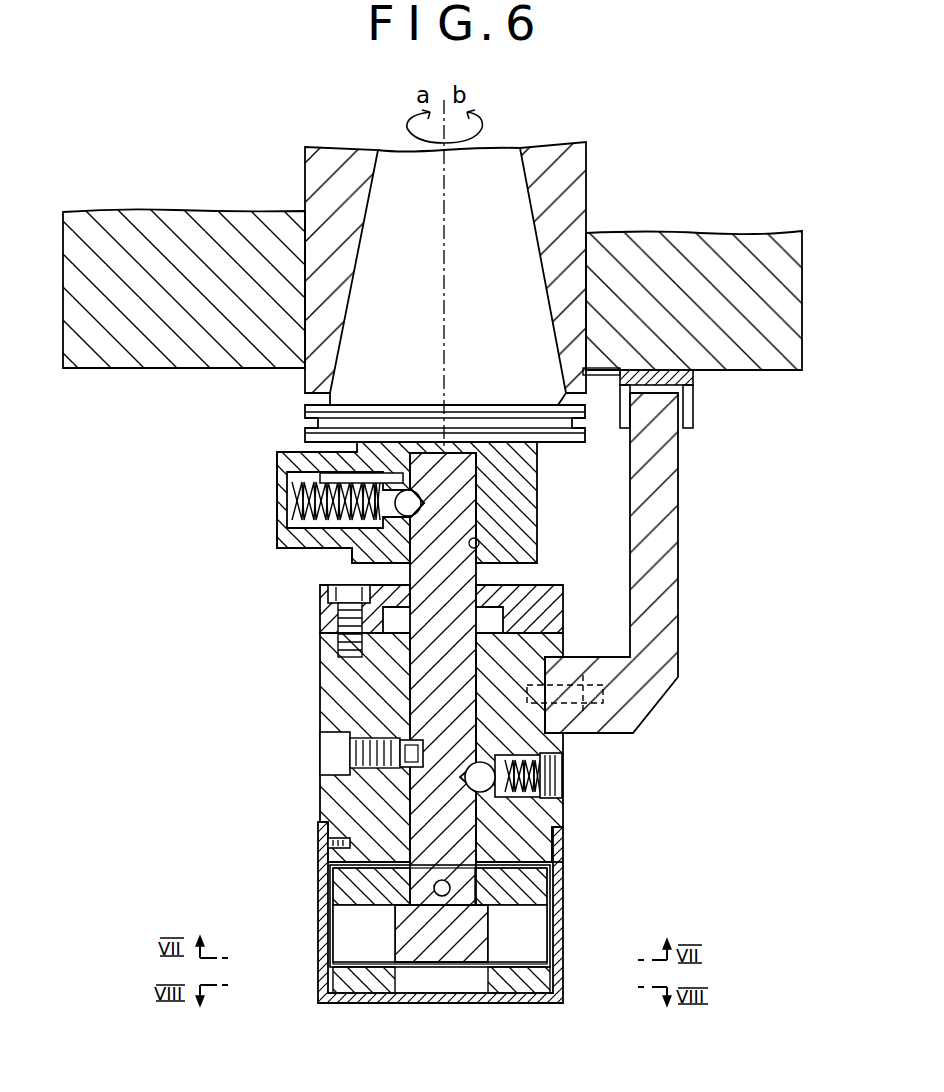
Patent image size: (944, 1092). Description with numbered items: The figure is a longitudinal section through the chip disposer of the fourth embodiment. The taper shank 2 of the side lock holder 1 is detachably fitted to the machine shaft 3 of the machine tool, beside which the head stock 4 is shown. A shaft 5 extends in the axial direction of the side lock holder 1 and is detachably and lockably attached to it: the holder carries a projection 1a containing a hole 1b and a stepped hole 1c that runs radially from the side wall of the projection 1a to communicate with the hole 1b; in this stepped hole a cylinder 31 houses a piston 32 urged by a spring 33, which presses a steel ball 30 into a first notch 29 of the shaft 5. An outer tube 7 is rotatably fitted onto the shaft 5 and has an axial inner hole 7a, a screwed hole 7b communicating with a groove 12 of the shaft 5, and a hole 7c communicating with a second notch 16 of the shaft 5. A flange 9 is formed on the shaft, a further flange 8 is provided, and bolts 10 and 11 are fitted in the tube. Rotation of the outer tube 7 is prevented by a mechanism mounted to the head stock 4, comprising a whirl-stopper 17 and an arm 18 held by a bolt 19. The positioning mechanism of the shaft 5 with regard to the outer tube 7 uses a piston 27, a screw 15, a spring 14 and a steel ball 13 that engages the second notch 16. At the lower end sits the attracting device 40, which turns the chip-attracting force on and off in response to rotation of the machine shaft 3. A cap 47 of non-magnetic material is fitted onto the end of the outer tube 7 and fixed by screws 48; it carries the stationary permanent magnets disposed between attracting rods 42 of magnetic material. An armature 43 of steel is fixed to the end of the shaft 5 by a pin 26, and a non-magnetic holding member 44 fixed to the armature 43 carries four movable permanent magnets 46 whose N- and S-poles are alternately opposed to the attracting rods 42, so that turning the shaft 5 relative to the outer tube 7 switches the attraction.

The side lock holder 1 is at (584, 445).
The projection 1a is at (510, 470).
The hole 1b is at (480, 543).
The stepped hole 1c is at (355, 553).
The taper shank 2 is at (492, 190).
The machine shaft 3 is at (556, 176).
The head stock 4 is at (748, 330).
The shaft 5 is at (500, 515).
The outer tube 7 is at (320, 683).
The inner hole 7a is at (418, 657).
The screwed hole 7b is at (340, 750).
The hole 7c is at (556, 825).
The flange 8 is at (345, 620).
The flange 9 is at (555, 590).
The bolt 10 is at (335, 593).
The bolt 11 is at (320, 755).
The groove 12 is at (422, 745).
The steel ball 13 is at (562, 865).
The spring 14 is at (562, 792).
The screw 15 is at (540, 768).
The second notch 16 is at (470, 780).
The whirl-stopper 17 is at (695, 382).
The arm 18 is at (650, 478).
The bolt 19 is at (603, 710).
The pin 26 is at (450, 889).
The piston 27 is at (560, 745).
The first notch 29 is at (422, 515).
The steel ball 30 is at (420, 468).
The cylinder 31 is at (285, 543).
The piston 32 is at (325, 478).
The spring 33 is at (290, 500).
The attracting device 40 is at (543, 1004).
The attracting rods 42 is at (355, 977).
The armature 43 is at (345, 903).
The holding member 44 is at (452, 947).
The movable permanent magnets 46 is at (340, 947).
The cap 47 is at (330, 882).
The screws 48 is at (328, 843).